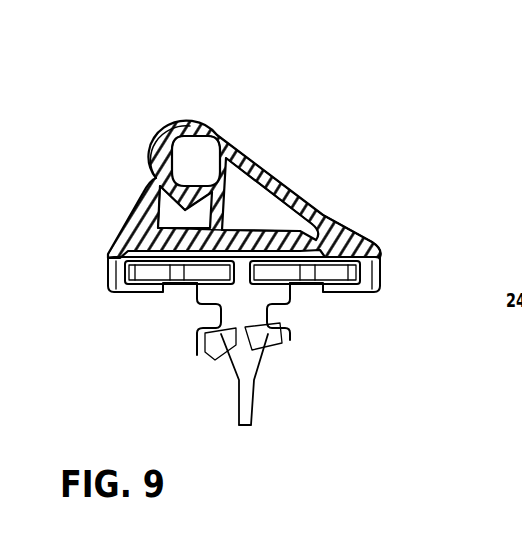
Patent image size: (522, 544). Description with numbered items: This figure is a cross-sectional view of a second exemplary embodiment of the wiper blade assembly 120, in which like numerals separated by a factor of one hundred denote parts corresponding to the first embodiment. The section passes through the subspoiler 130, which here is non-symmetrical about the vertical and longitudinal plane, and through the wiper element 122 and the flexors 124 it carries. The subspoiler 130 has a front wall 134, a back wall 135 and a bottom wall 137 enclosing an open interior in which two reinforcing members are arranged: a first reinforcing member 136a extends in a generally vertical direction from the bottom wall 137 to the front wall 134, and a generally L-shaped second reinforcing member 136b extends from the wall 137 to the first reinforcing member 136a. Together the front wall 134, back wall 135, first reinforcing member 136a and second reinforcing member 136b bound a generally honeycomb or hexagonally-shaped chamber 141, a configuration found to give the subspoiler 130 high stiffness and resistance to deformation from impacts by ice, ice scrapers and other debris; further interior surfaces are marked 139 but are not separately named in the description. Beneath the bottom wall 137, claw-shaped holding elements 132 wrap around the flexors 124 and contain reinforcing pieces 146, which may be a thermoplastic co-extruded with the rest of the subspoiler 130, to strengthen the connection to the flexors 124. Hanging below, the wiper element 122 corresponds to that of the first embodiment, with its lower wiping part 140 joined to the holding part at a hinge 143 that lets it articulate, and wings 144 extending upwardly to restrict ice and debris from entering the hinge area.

The wiper blade assembly 120 is at (242, 134).
The wiper element 122 is at (254, 423).
The flexors 124 is at (178, 278).
The subspoiler 130 is at (324, 211).
The holding elements 132 is at (110, 278).
The front wall 134 is at (331, 222).
The back wall 135 is at (158, 166).
The first reinforcing member 136a is at (258, 212).
The second reinforcing member 136b is at (172, 197).
The bottom wall 137 is at (210, 240).
The inner surface 139 is at (167, 222).
The lower wiping part 140 is at (250, 388).
The chamber 141 is at (195, 150).
The hinge 143 is at (246, 325).
The wings 144 is at (282, 322).
The reinforcing pieces 146 is at (137, 290).